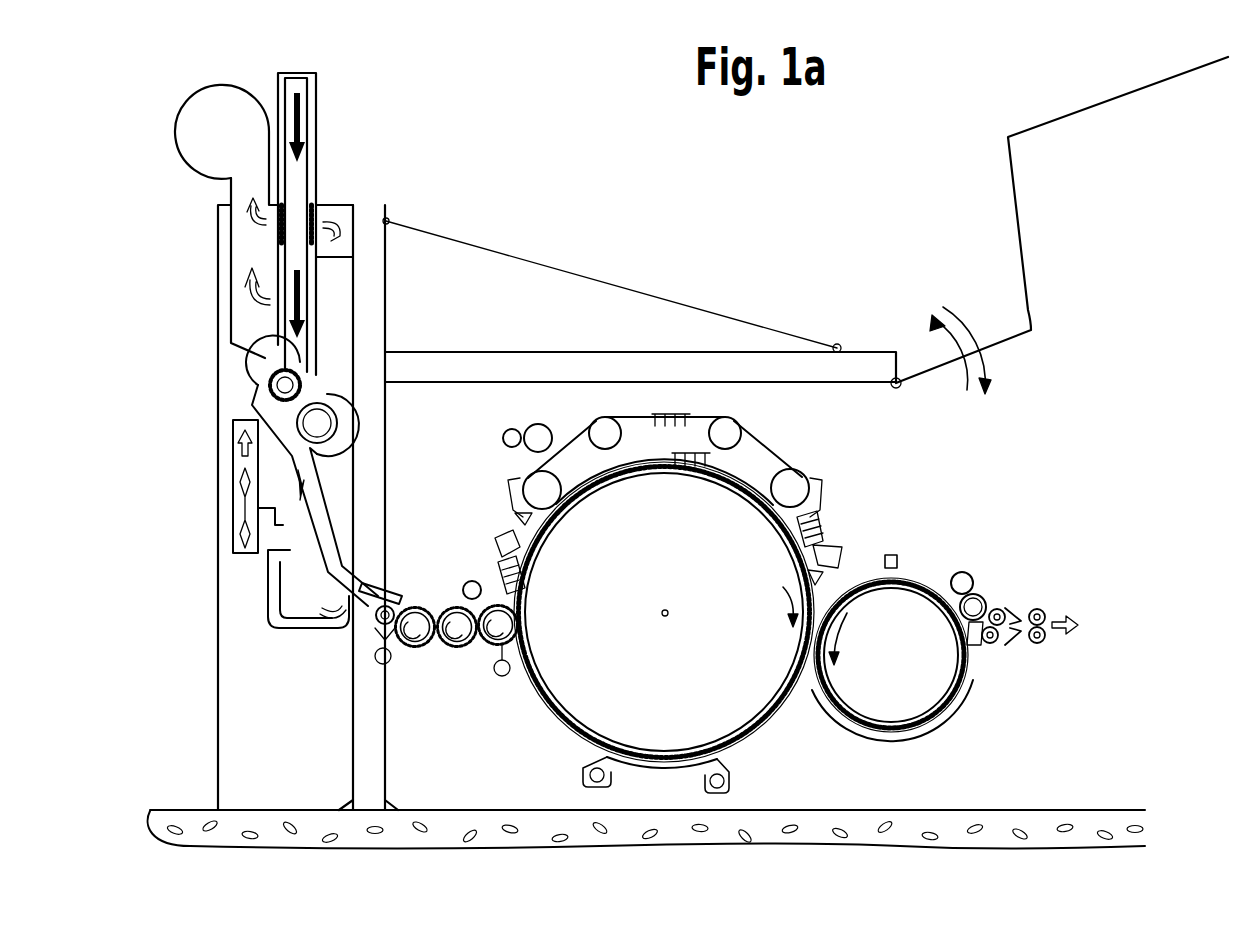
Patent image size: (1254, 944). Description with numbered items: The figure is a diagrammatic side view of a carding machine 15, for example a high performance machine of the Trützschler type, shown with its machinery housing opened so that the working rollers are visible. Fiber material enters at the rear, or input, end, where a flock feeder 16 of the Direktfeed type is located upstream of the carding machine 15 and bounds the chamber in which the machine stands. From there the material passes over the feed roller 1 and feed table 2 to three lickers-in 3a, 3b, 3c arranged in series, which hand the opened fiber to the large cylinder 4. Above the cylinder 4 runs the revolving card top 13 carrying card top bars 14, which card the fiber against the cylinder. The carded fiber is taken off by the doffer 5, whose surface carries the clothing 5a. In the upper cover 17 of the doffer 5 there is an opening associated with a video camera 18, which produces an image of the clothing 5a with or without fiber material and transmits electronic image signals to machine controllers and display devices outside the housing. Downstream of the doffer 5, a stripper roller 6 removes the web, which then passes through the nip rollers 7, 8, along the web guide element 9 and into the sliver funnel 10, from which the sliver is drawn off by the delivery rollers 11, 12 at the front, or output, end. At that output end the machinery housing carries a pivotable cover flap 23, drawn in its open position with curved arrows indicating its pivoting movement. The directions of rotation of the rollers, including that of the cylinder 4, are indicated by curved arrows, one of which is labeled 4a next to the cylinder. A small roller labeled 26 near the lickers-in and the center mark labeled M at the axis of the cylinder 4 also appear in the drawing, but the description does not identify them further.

The feed roller 1 is at (367, 645).
The feed table 2 is at (392, 597).
The licker-in 3a is at (422, 635).
The licker-in 3b is at (460, 635).
The licker-in 3c is at (498, 635).
The cylinder 4 is at (748, 710).
The drum rotation direction 4a is at (783, 592).
The doffer 5 is at (903, 700).
The clothing of the doffer 5a is at (858, 720).
The stripper roller 6 is at (962, 572).
The nip roller 7 is at (998, 606).
The nip roller 8 is at (990, 645).
The web guide element 9 is at (1010, 650).
The sliver funnel 10 is at (1030, 607).
The delivery roller 11 is at (1052, 607).
The delivery roller 12 is at (1040, 645).
The revolving card top 13 is at (780, 447).
The card top bars 14 is at (767, 460).
The carding machine 15 is at (496, 465).
The flock feeder 16 is at (190, 285).
The upper cover of the doffer 17 is at (923, 570).
The video camera 18 is at (887, 555).
The pivotable cover flap 23 is at (1008, 197).
The auxiliary roller 26 is at (500, 592).
The drum axis M is at (661, 613).